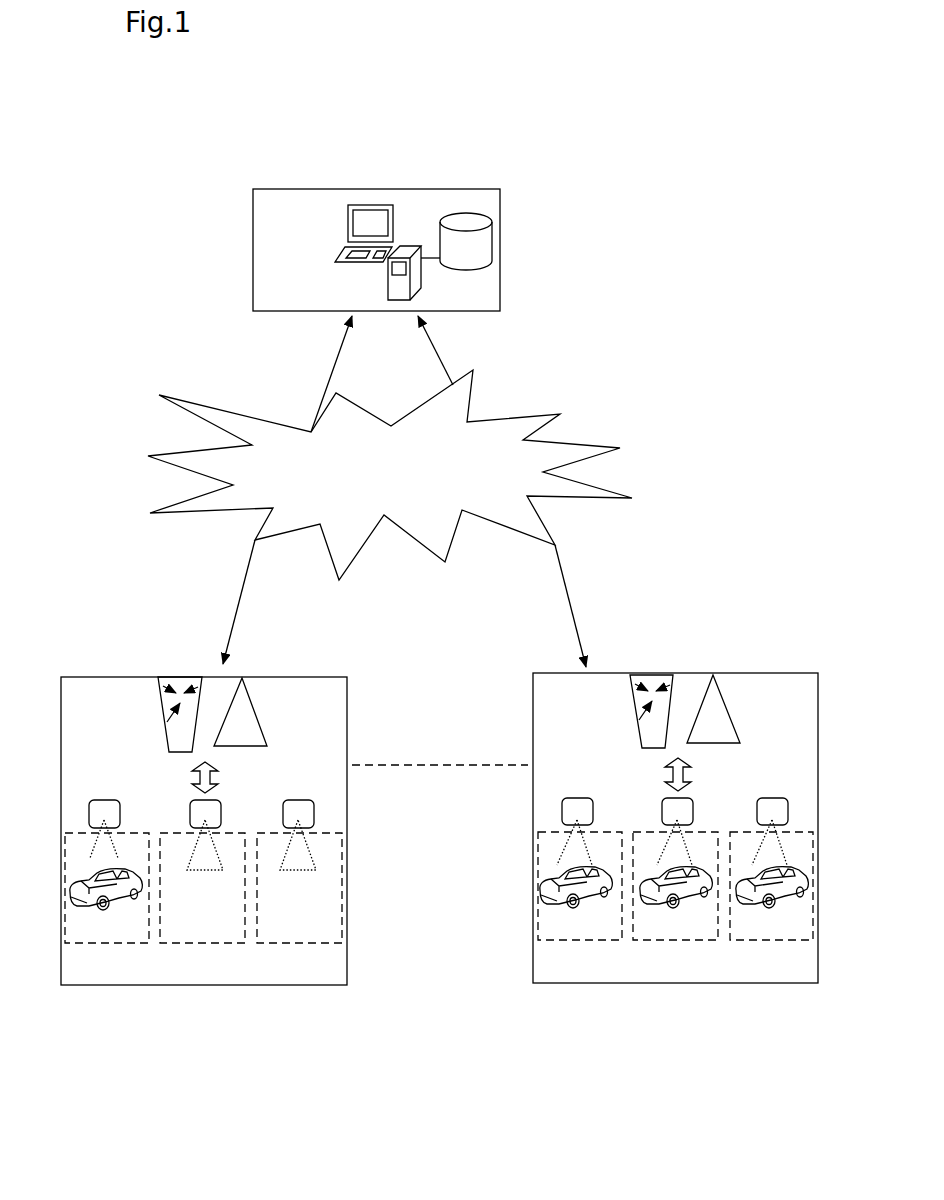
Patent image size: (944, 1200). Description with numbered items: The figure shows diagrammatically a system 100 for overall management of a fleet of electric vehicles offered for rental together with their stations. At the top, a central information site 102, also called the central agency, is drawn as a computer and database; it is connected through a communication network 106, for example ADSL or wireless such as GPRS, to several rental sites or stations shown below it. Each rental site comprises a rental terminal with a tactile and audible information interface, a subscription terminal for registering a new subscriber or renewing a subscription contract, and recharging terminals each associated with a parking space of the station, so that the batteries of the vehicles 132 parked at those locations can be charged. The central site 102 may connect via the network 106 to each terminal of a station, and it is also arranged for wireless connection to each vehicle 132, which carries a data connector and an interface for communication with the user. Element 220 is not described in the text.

The system 100 is at (186, 192).
The central information site 102 is at (500, 242).
The communication network 106 is at (523, 415).
The vehicle 132 is at (103, 903).
The sensor detection field 220 is at (113, 850).